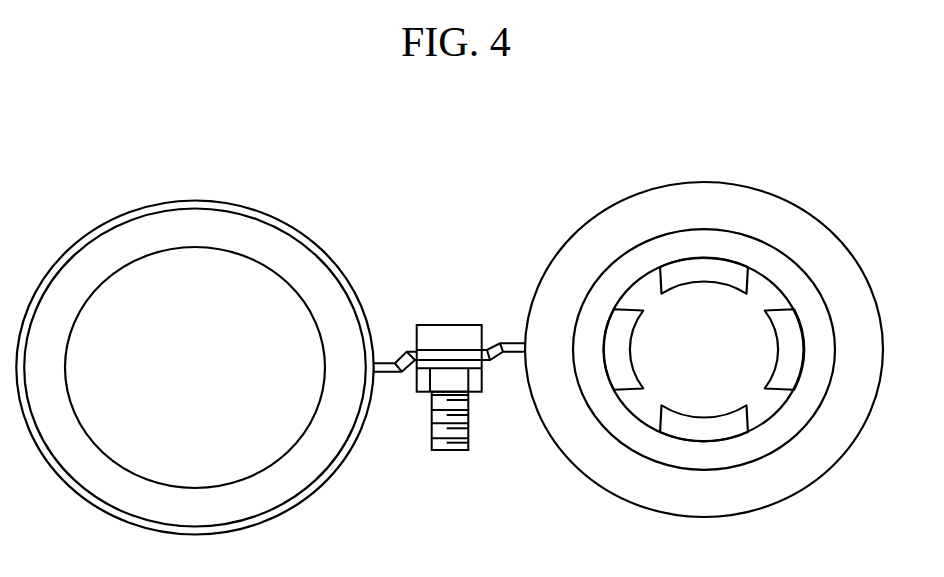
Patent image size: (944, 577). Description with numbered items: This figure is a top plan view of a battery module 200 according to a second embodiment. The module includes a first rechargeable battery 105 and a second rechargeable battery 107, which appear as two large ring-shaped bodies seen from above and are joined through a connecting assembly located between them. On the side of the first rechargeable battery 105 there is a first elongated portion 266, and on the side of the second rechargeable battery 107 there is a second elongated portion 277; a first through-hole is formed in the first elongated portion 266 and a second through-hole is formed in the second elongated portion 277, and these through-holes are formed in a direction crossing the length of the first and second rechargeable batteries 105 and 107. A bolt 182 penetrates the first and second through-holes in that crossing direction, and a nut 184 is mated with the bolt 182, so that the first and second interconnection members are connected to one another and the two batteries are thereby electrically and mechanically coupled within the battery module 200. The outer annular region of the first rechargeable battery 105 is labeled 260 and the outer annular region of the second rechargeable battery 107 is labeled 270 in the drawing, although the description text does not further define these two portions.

The first rechargeable battery 105 is at (704, 310).
The second rechargeable battery 107 is at (194, 324).
The bolt 182 is at (440, 333).
The nut 184 is at (420, 384).
The battery module 200 is at (468, 150).
The outer ring portion of first terminal 260 is at (602, 205).
The first elongated portion 266 is at (488, 347).
The outer ring portion of second terminal 270 is at (270, 211).
The second elongated portion 277 is at (405, 358).